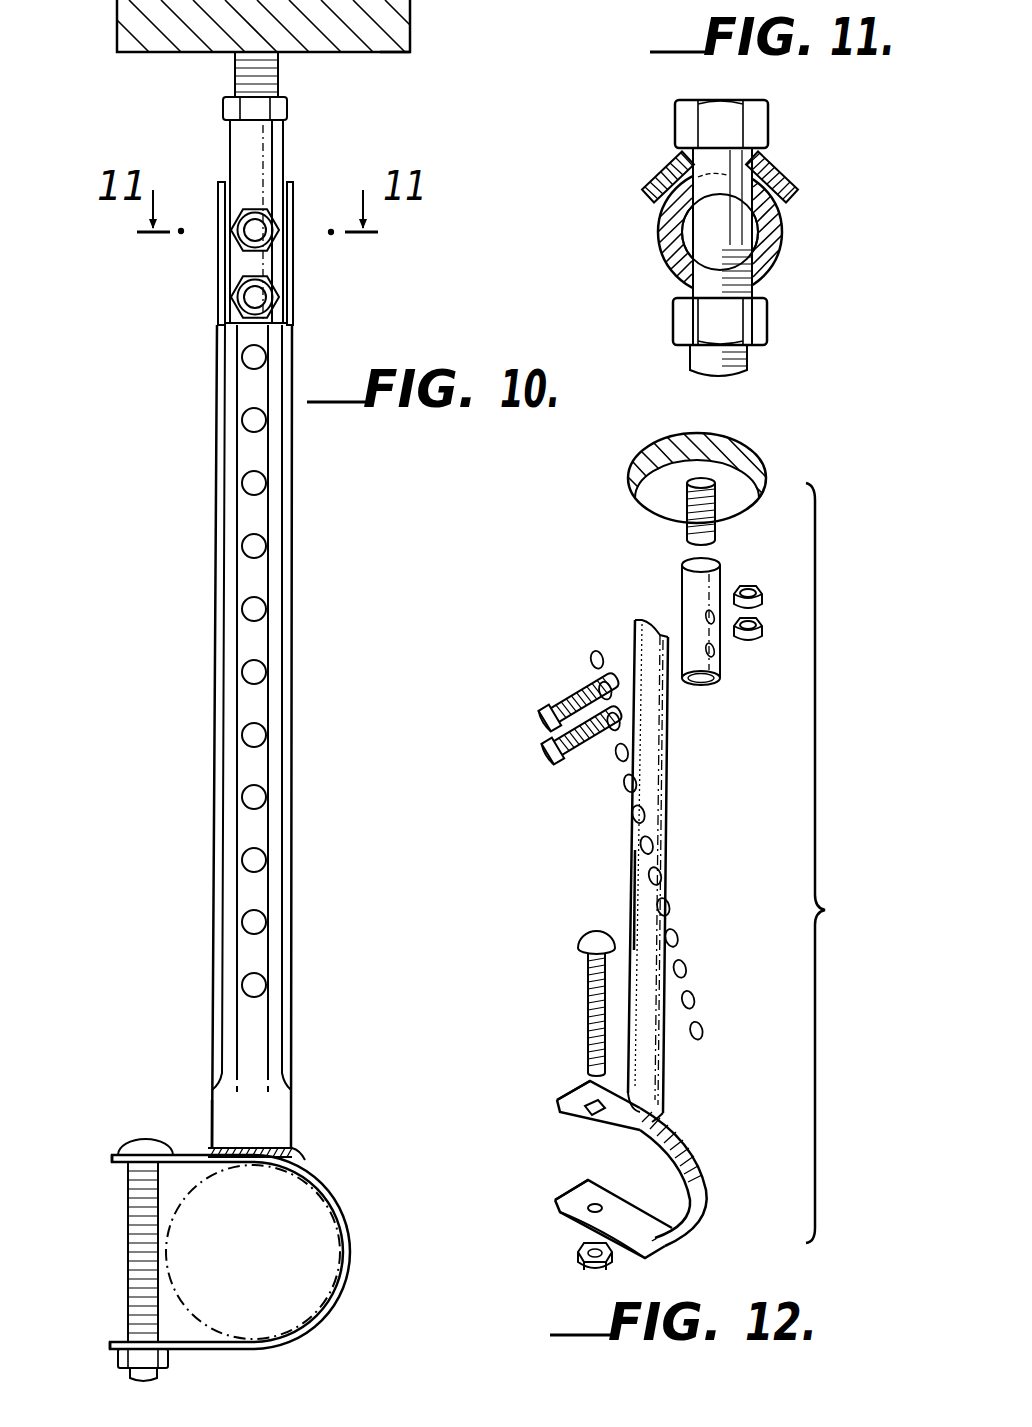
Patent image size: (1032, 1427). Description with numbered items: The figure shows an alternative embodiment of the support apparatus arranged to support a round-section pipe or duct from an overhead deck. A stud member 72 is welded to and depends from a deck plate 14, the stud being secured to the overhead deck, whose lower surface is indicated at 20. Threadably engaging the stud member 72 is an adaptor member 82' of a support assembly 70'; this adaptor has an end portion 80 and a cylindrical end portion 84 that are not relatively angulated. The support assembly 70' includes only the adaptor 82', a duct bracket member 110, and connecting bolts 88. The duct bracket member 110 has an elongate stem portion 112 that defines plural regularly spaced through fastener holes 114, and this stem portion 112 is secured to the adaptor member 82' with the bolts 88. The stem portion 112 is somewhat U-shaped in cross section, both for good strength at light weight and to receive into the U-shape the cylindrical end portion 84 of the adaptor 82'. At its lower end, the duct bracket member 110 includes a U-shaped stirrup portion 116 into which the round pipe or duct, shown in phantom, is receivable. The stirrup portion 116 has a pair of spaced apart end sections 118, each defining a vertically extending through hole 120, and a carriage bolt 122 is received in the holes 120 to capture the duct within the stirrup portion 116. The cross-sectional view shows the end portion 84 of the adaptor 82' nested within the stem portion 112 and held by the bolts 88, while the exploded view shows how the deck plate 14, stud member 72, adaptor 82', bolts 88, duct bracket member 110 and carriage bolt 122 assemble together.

In FIG. 10, the deck plate 14 is at (400, 32).
In FIG. 12, the deck plate 14 is at (755, 445).
In FIG. 10, the lower surface of base plate 20 is at (400, 56).
In FIG. 10, the stud member 72 is at (300, 78).
In FIG. 12, the stud member 72 is at (676, 532).
In FIG. 10, the end portion 80 is at (228, 130).
In FIG. 10, the adaptor member 82' is at (305, 211).
In FIG. 11, the adaptor member 82' is at (665, 238).
In FIG. 12, the adaptor member 82' is at (662, 620).
In FIG. 10, the cylindrical end portion 84 is at (273, 266).
In FIG. 11, the cylindrical end portion 84 is at (782, 240).
In FIG. 10, the connecting bolts 88 is at (238, 288).
In FIG. 11, the connecting bolts 88 is at (675, 115).
In FIG. 12, the connecting bolts 88 is at (548, 738).
In FIG. 10, the duct bracket member 110 is at (210, 633).
In FIG. 12, the duct bracket member 110 is at (674, 791).
In FIG. 10, the support assembly 70' is at (157, 941).
In FIG. 10, the stem portion 112 is at (282, 845).
In FIG. 11, the stem portion 112 is at (797, 190).
In FIG. 12, the stem portion 112 is at (634, 893).
In FIG. 10, the fastener holes 114 is at (263, 540).
In FIG. 12, the fastener holes 114 is at (650, 813).
In FIG. 10, the stirrup portion 116 is at (333, 1208).
In FIG. 12, the stirrup portion 116 is at (692, 1190).
In FIG. 10, the end sections 118 is at (120, 1156).
In FIG. 12, the end sections 118 is at (570, 1096).
In FIG. 12, the through hole 120 is at (583, 1112).
In FIG. 10, the carriage bolt 122 is at (128, 1200).
In FIG. 12, the carriage bolt 122 is at (586, 1005).